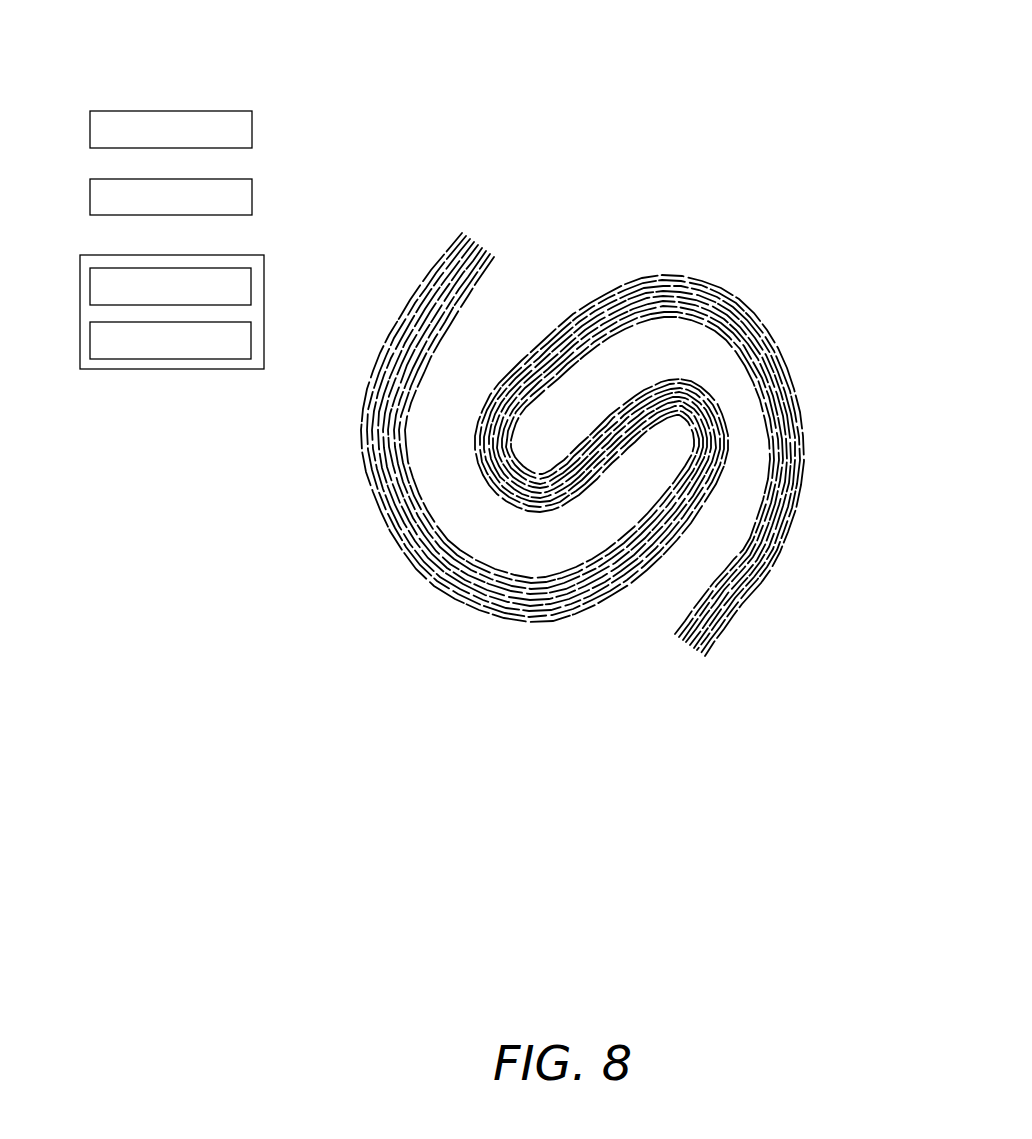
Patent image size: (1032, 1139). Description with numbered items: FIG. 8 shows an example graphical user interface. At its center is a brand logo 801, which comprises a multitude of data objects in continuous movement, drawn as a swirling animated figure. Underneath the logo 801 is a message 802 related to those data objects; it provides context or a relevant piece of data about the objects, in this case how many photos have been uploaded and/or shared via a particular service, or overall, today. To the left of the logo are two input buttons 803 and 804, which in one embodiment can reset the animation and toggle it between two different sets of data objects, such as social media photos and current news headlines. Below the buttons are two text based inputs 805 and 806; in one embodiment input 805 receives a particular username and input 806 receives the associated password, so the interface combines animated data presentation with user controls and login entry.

The brand logo 801 is at (413, 552).
The message 802 is at (377, 807).
The input button 803 is at (252, 111).
The input button 804 is at (253, 182).
The text based input 805 is at (193, 305).
The text based input 806 is at (95, 359).